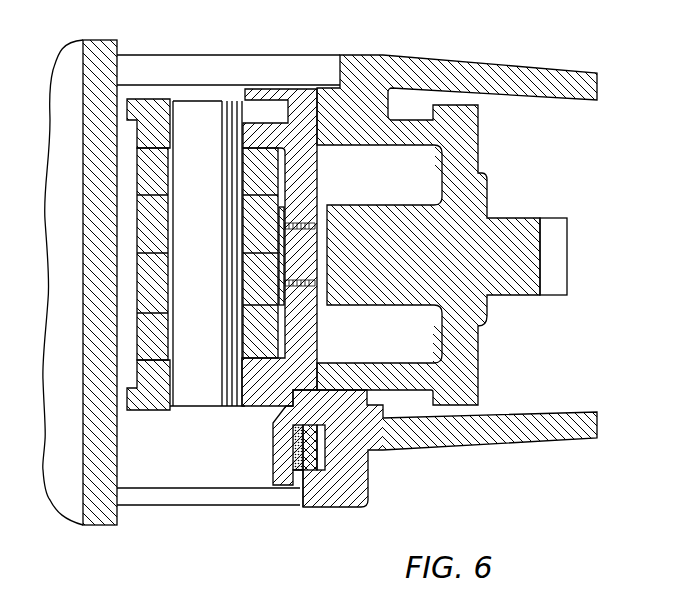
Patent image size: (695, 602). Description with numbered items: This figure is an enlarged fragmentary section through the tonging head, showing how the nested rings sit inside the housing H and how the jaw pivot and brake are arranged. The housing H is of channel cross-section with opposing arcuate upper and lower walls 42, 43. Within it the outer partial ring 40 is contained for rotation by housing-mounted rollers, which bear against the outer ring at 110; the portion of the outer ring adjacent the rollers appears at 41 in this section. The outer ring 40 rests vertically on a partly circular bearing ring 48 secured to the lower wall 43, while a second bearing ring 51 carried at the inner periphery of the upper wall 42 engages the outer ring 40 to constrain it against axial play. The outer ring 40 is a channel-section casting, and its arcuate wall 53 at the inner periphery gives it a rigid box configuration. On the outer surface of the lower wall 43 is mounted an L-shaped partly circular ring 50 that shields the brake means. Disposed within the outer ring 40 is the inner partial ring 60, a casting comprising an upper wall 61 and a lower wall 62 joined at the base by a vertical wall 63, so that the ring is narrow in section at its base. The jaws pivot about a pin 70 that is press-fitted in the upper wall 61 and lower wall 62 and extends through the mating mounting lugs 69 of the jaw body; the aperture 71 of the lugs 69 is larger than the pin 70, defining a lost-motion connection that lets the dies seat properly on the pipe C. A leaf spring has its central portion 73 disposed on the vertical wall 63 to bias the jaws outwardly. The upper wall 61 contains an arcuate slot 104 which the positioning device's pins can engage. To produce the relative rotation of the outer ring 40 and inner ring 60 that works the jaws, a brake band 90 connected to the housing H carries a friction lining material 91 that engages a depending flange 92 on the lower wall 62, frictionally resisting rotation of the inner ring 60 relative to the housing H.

The outer partial ring 40 is at (484, 177).
The shaft stub 41 is at (553, 250).
The upper wall 42 is at (498, 75).
The lower wall 43 is at (503, 430).
The bearing ring 48 is at (362, 400).
The L-shaped partly circular ring 50 is at (358, 493).
The bearing ring 51 is at (377, 110).
The arcuate wall 53 is at (323, 210).
The inner partial ring 60 is at (242, 252).
The upper wall 61 is at (138, 103).
The lower wall 62 is at (155, 403).
The vertical wall 63 is at (308, 173).
The mounting lugs 69 is at (250, 203).
The pin 70 is at (228, 105).
The aperture 71 is at (168, 262).
The central portion 73 is at (280, 262).
The brake band 90 is at (315, 470).
The friction lining material 91 is at (300, 470).
The depending flange 92 is at (285, 460).
The arcuate slot 104 is at (267, 122).
The roller bearing location 110 is at (478, 134).
The housing H is at (446, 219).
The pipe C is at (117, 522).